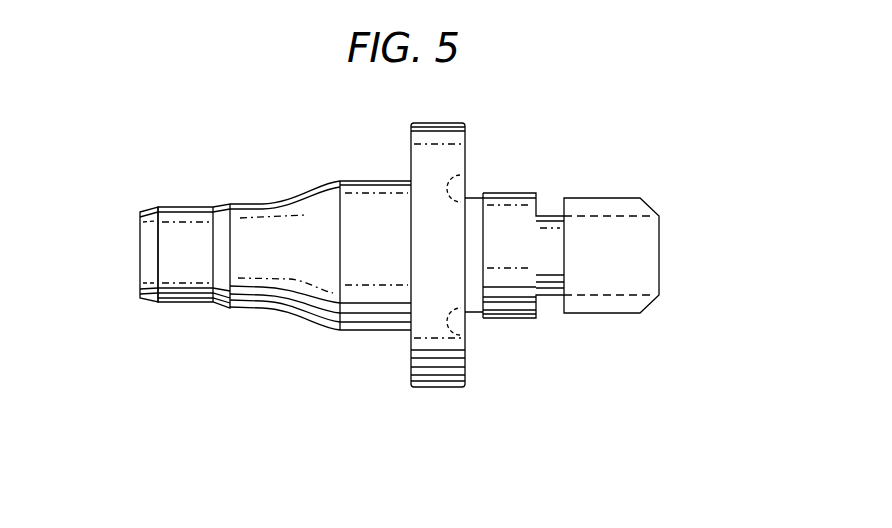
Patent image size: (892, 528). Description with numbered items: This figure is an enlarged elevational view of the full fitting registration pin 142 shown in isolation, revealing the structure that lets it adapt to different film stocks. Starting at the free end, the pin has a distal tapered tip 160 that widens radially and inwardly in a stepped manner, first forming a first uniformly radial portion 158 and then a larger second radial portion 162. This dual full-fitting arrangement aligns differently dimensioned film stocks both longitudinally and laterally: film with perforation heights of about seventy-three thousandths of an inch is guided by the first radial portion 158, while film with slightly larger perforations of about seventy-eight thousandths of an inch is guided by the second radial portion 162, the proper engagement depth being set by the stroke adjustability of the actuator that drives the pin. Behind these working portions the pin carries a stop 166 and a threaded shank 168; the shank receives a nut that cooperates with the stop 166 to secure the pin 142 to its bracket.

The full fitting registration pin 142 is at (659, 255).
The first uniformly radial portion 158 is at (193, 303).
The distal tapered tip 160 is at (152, 209).
The second radial portion 162 is at (253, 202).
The stop 166 is at (466, 148).
The threaded shank 168 is at (603, 313).